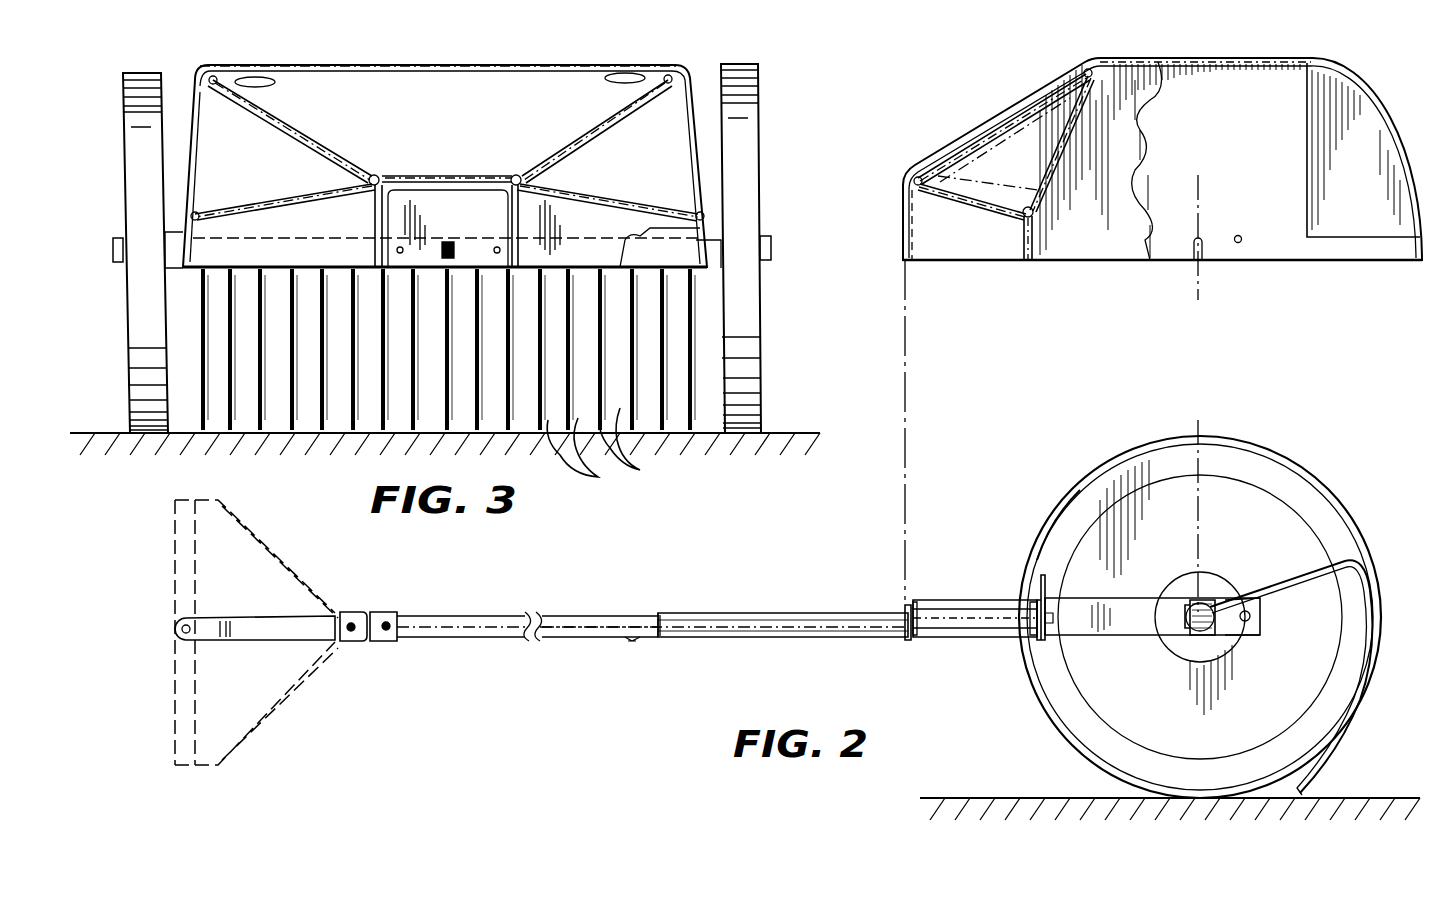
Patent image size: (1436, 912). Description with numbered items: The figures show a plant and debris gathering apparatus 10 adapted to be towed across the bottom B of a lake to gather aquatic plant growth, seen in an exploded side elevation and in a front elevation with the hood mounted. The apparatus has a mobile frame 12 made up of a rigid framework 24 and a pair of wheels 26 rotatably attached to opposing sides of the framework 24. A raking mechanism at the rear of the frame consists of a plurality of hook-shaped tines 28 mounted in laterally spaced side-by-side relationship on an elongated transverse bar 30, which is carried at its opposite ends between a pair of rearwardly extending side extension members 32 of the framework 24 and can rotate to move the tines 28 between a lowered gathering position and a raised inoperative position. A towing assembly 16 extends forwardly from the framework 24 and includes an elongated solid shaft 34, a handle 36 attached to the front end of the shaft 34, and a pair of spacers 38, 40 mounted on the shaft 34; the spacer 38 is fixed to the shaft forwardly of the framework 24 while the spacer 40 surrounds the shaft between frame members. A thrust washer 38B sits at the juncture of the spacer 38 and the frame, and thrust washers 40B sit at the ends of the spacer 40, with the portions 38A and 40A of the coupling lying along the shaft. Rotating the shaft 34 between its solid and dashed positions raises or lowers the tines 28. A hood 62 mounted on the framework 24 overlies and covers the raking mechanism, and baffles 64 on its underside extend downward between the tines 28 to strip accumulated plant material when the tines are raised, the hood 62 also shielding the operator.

In FIG. 2, the plant and debris gathering apparatus 10 is at (888, 405).
In FIG. 2, the mobile frame 12 is at (1138, 596).
In FIG. 2, the towing assembly 16 is at (608, 640).
In FIG. 2, the rigid framework 24 is at (1107, 640).
In FIG. 3, the wheels 26 is at (752, 160).
In FIG. 2, the wheels 26 is at (1302, 490).
In FIG. 3, the tines 28 is at (614, 473).
In FIG. 2, the tines 28 is at (1296, 578).
In FIG. 2, the transverse bar 30 is at (1225, 635).
In FIG. 2, the side extension members 32 is at (1279, 611).
In FIG. 3, the elongated solid shaft 34 is at (450, 244).
In FIG. 2, the elongated solid shaft 34 is at (565, 614).
In FIG. 2, the handle 36 is at (275, 616).
In FIG. 2, the spacer 38 is at (790, 610).
In FIG. 2, the tube inner section 38A is at (710, 630).
In FIG. 2, the thrust washer 38B is at (905, 640).
In FIG. 2, the spacer 40 is at (960, 598).
In FIG. 2, the sleeve lower end 40A is at (948, 640).
In FIG. 2, the thrust washers 40B is at (1035, 600).
In FIG. 3, the hood 62 is at (540, 62).
In FIG. 2, the hood 62 is at (992, 112).
In FIG. 2, the baffles 64 is at (1348, 225).
In FIG. 3, the bottom of a lake B is at (106, 433).
In FIG. 2, the bottom of a lake B is at (1028, 798).